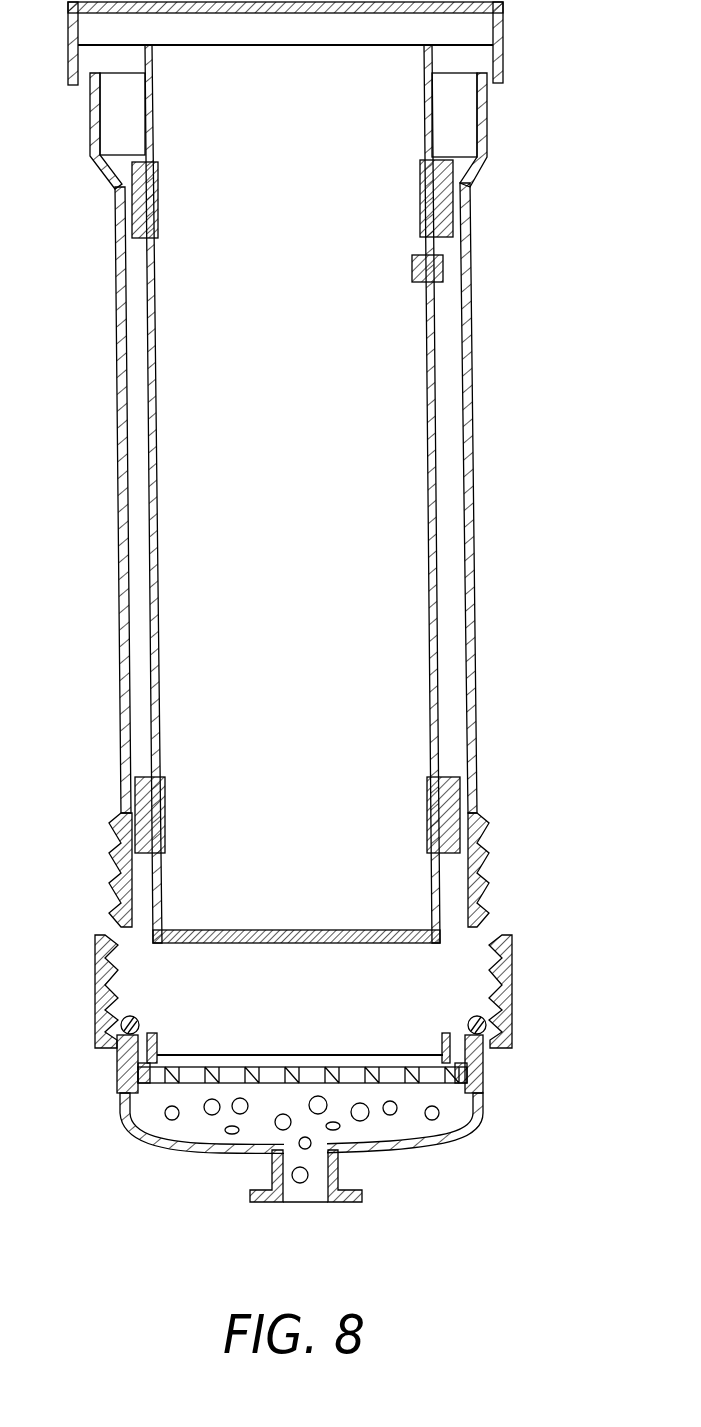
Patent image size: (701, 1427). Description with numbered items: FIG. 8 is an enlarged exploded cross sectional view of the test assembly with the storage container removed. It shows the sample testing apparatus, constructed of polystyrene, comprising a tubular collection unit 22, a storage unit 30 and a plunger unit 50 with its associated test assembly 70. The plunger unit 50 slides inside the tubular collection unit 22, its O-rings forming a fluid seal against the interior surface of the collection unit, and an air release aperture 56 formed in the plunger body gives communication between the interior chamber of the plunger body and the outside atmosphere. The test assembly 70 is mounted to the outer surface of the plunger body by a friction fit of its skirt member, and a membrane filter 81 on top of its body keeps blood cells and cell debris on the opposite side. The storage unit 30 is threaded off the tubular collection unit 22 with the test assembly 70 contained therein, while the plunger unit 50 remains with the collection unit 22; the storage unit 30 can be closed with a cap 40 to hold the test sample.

The tubular collection unit 22 is at (478, 645).
The plunger unit 50 is at (436, 712).
The air release aperture 56 is at (446, 268).
The storage unit 30 is at (492, 1128).
The test assembly 70 is at (489, 1076).
The membrane filter 81 is at (368, 1063).
The cap 40 is at (362, 1197).